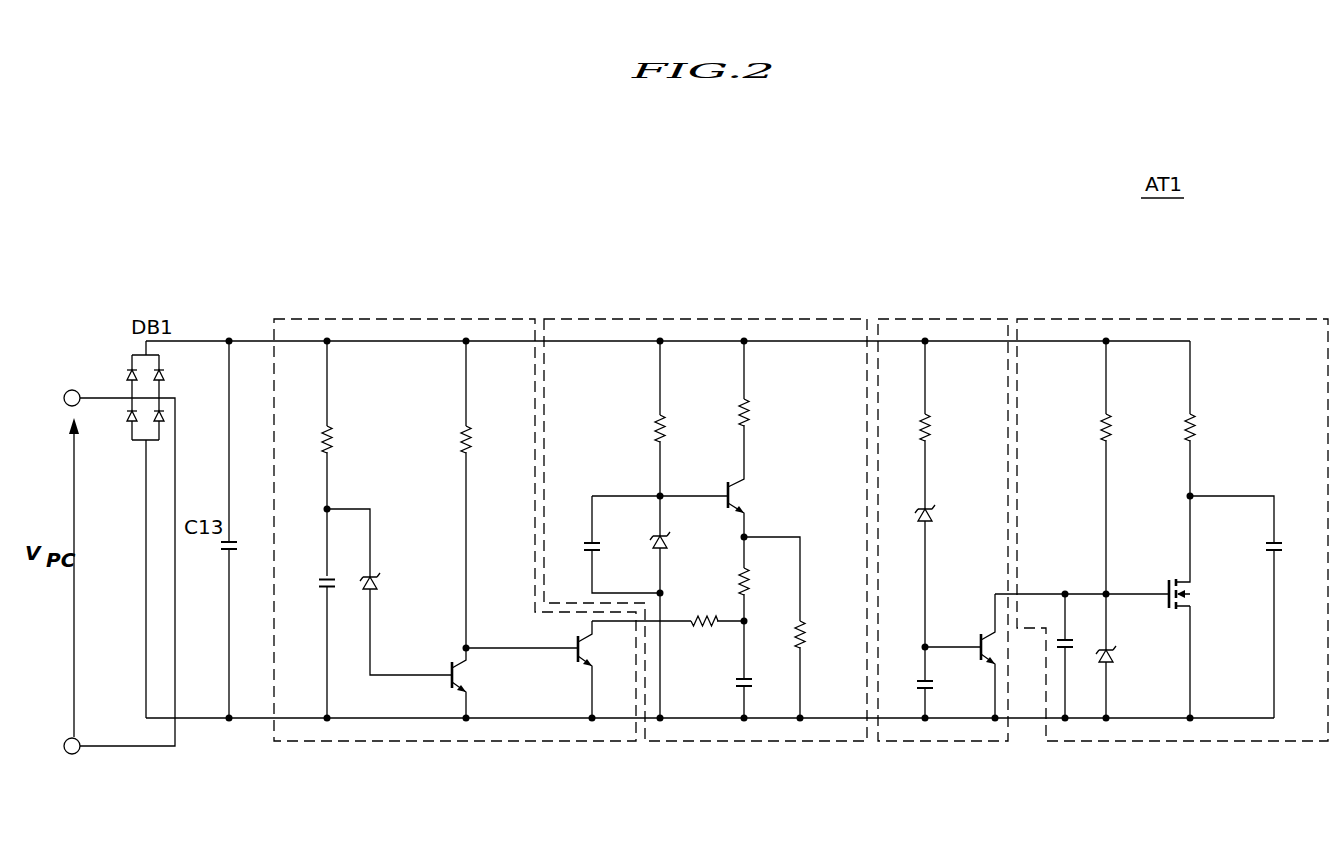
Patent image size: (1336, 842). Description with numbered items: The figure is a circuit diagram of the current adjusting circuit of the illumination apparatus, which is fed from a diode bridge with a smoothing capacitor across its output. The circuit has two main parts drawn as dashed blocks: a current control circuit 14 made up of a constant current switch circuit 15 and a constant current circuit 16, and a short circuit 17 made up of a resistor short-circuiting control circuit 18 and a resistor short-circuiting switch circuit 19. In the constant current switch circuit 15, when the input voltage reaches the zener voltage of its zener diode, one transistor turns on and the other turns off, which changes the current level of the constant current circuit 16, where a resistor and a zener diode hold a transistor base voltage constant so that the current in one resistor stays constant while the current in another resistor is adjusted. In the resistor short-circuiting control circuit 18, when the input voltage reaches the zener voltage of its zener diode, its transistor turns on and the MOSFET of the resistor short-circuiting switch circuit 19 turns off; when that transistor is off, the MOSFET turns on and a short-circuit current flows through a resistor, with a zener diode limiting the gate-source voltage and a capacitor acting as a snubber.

The current control circuit 14 is at (590, 291).
The constant current switch circuit 15 is at (401, 319).
The constant current circuit 16 is at (681, 319).
The short circuit 17 is at (1040, 293).
The resistor short-circuiting control circuit 18 is at (946, 319).
The resistor short-circuiting switch circuit 19 is at (1137, 319).